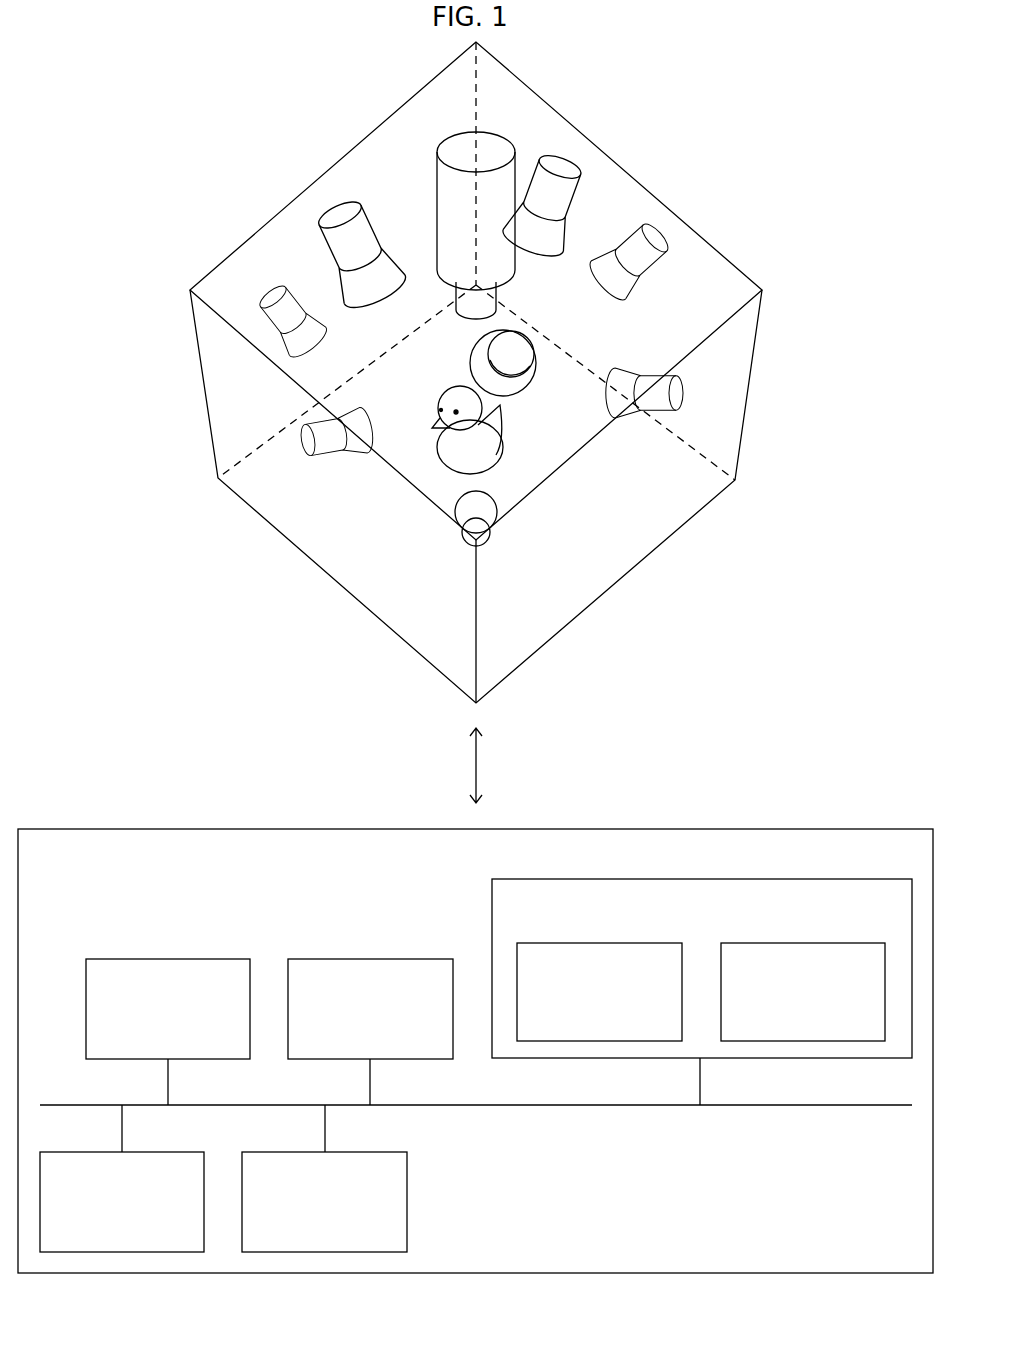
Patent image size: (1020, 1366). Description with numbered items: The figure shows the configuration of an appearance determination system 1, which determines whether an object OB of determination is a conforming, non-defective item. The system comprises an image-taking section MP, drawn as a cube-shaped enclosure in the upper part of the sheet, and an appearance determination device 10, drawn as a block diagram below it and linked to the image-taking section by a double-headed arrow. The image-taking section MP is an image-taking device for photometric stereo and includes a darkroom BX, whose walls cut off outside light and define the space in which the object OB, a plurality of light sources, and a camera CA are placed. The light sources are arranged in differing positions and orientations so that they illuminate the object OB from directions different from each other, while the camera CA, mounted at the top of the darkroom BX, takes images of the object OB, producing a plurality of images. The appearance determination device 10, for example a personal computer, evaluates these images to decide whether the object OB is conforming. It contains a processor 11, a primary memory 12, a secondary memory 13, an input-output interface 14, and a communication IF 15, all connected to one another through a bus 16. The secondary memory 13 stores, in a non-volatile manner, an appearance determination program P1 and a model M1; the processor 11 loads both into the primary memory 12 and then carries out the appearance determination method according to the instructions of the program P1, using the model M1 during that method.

The appearance determination system 1 is at (855, 80).
The darkroom BX is at (750, 377).
The image-taking section MP is at (319, 151).
The camera CA is at (490, 145).
The object of determination OB is at (500, 447).
The appearance determination device 10 is at (898, 829).
The processor 11 is at (216, 960).
The primary memory 12 is at (419, 960).
The secondary memory 13 is at (880, 879).
The appearance determination program P1 is at (646, 943).
The model M1 is at (849, 943).
The input-output interface 14 is at (169, 1152).
The communication IF 15 is at (369, 1152).
The bus 16 is at (880, 1105).